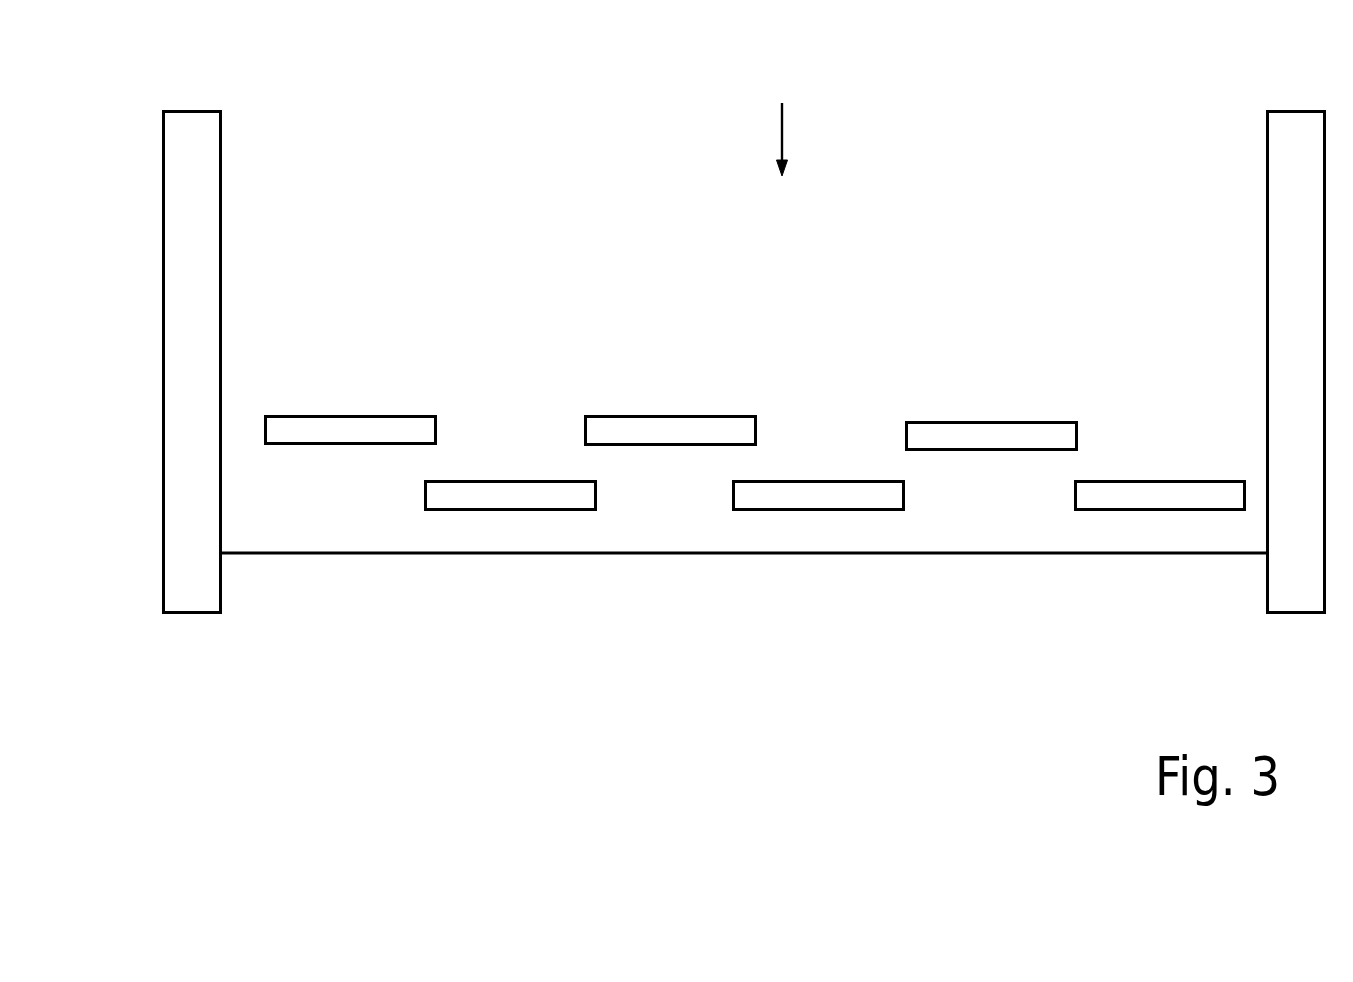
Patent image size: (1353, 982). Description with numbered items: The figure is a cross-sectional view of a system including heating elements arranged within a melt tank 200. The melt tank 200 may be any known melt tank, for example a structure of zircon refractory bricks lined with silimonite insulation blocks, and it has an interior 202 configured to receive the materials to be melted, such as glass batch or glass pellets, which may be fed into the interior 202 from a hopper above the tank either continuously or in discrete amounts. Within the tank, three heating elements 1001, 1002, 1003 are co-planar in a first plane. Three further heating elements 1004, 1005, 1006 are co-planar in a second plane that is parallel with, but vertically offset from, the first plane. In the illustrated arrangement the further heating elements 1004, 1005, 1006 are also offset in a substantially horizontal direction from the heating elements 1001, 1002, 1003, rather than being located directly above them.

The melt tank 200 is at (160, 228).
The interior 202 is at (783, 116).
The heating element 1001 is at (504, 480).
The heating element 1002 is at (805, 480).
The heating element 1003 is at (1140, 479).
The further heating element 1004 is at (974, 421).
The further heating element 1005 is at (667, 415).
The further heating element 1006 is at (342, 415).